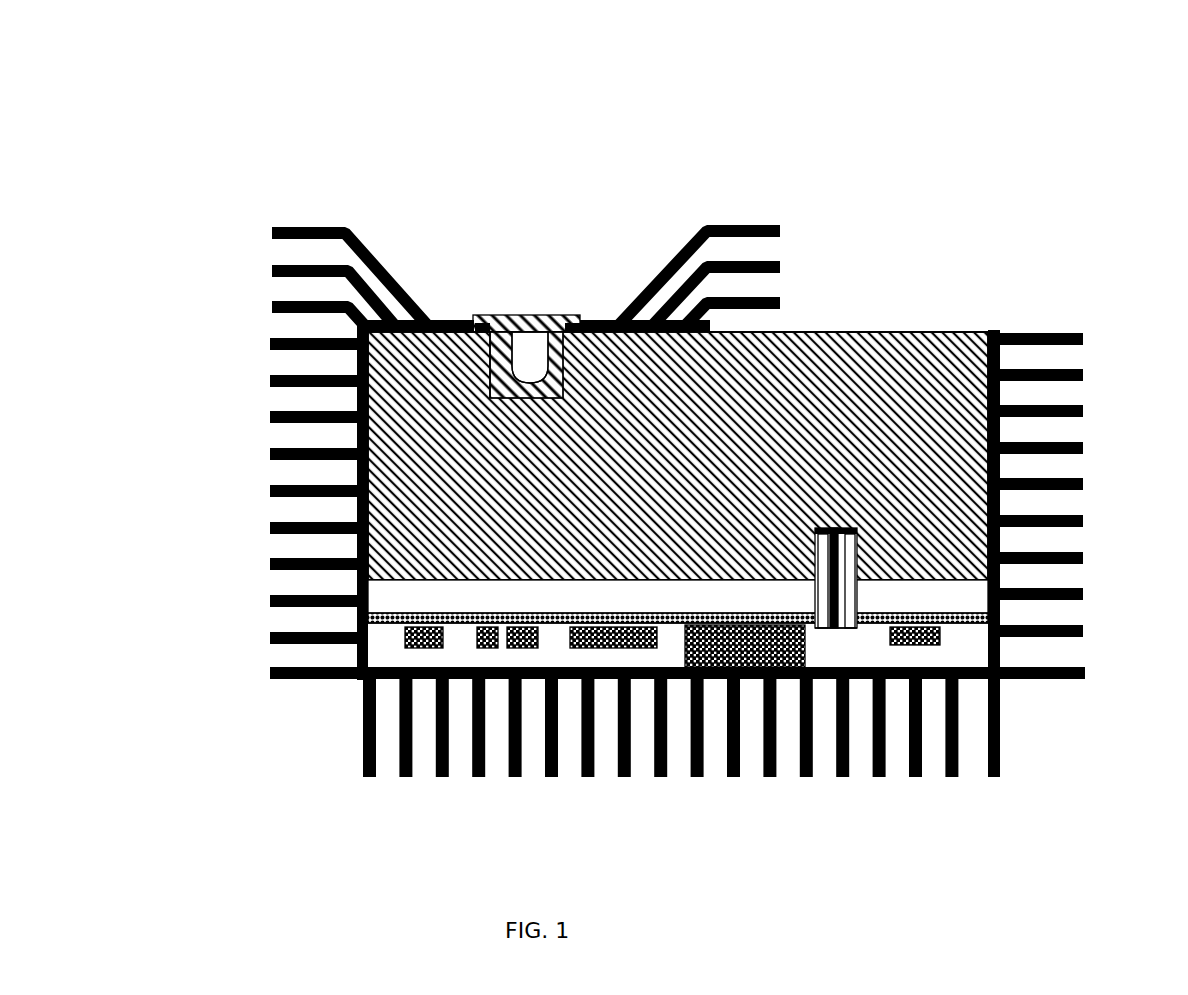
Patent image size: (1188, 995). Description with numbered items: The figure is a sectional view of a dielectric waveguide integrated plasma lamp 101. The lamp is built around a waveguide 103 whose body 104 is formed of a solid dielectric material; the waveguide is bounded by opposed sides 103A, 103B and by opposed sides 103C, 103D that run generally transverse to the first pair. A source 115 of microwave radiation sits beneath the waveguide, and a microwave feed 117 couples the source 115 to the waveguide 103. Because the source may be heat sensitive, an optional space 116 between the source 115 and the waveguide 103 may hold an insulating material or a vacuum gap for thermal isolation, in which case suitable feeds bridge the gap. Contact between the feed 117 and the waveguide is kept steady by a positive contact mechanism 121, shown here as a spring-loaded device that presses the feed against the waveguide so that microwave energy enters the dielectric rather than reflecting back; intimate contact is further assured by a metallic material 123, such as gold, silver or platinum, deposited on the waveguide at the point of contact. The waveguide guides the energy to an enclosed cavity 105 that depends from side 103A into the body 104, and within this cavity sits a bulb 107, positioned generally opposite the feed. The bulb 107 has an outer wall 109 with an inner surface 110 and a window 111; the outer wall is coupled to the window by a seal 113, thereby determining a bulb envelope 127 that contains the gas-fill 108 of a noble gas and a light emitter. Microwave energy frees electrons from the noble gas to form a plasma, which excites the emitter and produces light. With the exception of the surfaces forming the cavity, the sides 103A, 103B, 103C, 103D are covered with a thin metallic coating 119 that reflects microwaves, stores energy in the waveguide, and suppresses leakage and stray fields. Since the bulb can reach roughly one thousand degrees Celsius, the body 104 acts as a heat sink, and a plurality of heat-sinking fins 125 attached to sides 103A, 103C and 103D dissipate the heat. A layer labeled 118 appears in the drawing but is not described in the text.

The dielectric waveguide integrated plasma lamp 101 is at (352, 117).
The waveguide 103 is at (885, 330).
The side of waveguide 103A is at (793, 332).
The side of waveguide 103B is at (473, 585).
The side of waveguide 103C is at (357, 398).
The side of waveguide 103D is at (988, 475).
The body 104 is at (830, 395).
The cavity 105 is at (453, 332).
The bulb 107 is at (497, 305).
The gas-fill 108 is at (532, 340).
The bulb envelope 127 is at (530, 357).
The outer wall 109 is at (508, 363).
The inner surface 110 is at (562, 325).
The window 111 is at (577, 308).
The seal 113 is at (484, 367).
The source of microwave radiation 115 is at (710, 624).
The space 116 is at (399, 601).
The microwave feed 117 is at (838, 628).
The bottom insulating layer 118 is at (652, 583).
The metallic coating 119 is at (835, 330).
The positive contact mechanism 121 is at (848, 540).
The metallic material 123 is at (838, 530).
The heat-sinking fins 125 is at (311, 229).